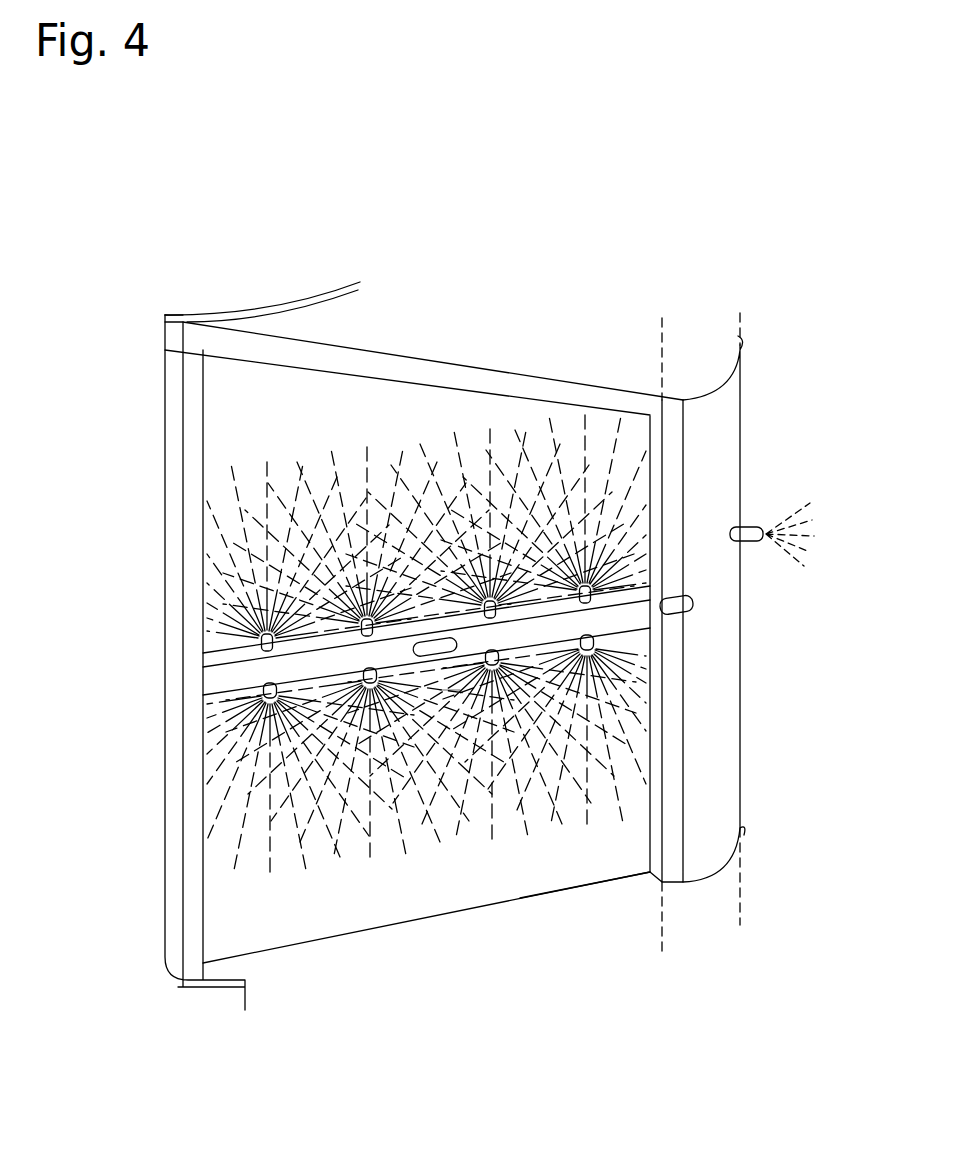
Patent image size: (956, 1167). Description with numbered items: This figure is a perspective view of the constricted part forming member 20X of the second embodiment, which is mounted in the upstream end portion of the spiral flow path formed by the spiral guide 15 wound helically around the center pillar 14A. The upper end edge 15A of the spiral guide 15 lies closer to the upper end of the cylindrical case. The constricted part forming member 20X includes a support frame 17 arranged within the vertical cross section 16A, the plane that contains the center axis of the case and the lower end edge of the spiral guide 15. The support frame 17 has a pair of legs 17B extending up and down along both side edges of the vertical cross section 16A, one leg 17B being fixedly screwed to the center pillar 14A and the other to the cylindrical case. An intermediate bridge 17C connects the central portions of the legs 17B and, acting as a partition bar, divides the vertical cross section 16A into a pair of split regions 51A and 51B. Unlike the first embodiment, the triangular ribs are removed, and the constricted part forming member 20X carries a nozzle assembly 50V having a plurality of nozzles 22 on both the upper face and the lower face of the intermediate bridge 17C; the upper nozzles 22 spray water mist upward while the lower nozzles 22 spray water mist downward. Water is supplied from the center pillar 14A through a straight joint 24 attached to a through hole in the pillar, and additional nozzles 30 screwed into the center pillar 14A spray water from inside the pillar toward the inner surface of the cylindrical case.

The constricted part forming member 20X is at (150, 421).
The nozzles 22 is at (358, 618).
The split region 51A is at (217, 637).
The split region 51B is at (217, 733).
The intermediate bridge 17C is at (217, 677).
The support frame 17 is at (157, 814).
The legs 17B is at (665, 826).
The spiral guide 15 is at (208, 992).
The upper end edge 15A is at (350, 935).
The vertical cross section 16A is at (568, 872).
The nozzle assembly 50V is at (450, 693).
The center pillar 14A is at (727, 770).
The straight joint 24 is at (697, 605).
The nozzles 30 is at (756, 522).